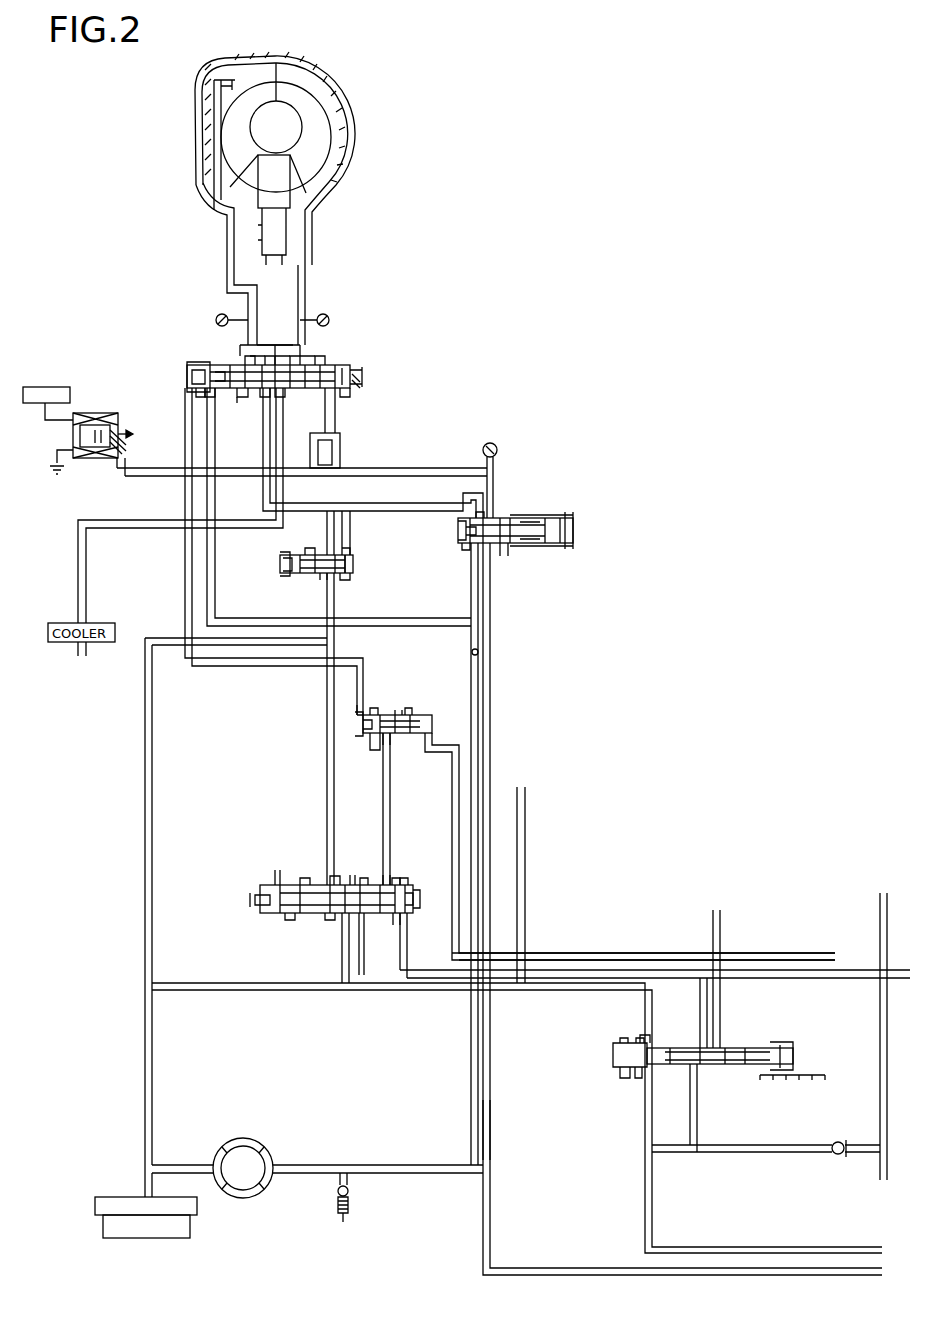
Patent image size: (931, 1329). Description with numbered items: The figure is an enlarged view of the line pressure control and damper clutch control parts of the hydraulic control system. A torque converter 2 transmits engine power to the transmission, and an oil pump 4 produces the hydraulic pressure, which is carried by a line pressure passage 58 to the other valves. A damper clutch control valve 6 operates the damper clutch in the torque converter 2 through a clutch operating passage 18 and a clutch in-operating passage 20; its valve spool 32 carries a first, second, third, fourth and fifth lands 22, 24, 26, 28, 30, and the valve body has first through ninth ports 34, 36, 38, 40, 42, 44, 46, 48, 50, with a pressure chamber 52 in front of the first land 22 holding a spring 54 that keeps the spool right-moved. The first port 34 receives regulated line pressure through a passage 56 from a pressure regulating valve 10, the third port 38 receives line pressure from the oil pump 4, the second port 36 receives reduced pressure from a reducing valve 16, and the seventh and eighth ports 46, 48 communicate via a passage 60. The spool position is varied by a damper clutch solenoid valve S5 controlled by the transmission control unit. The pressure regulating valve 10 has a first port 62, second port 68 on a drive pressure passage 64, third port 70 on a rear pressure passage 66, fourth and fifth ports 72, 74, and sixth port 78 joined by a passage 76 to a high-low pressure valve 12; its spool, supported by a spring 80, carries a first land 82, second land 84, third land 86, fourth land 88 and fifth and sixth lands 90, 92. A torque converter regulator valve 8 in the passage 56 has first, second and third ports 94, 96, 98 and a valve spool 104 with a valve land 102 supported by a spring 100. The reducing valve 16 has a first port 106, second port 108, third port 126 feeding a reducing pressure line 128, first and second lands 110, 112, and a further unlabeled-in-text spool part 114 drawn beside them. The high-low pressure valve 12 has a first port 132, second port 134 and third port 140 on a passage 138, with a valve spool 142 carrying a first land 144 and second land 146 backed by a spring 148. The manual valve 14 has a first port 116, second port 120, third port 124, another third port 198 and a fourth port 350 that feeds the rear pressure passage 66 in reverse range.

The torque converter 2 is at (357, 112).
The oil pump 4 is at (243, 1198).
The damper clutch control valve 6 is at (378, 379).
The torque converter regulator valve 8 is at (278, 574).
The pressure regulating valve 10 is at (256, 900).
The high-low pressure valve 12 is at (350, 739).
The manual valve 14 is at (611, 1058).
The reducing valve 16 is at (555, 505).
The clutch operating passage 18 is at (305, 276).
The clutch in-operating passage 20 is at (227, 276).
The first land 22 is at (220, 370).
The second land 24 is at (240, 395).
The third land 26 is at (280, 360).
The fourth land 28 is at (312, 367).
The fifth land 30 is at (347, 392).
The valve spool 32 is at (343, 372).
The first port 34 is at (260, 393).
The second port 36 is at (334, 393).
The third port 38 is at (212, 393).
The fourth port 40 is at (196, 392).
The fifth port 42 is at (293, 362).
The sixth port 44 is at (260, 366).
The seventh port 46 is at (320, 368).
The eighth port 48 is at (250, 372).
The ninth port 50 is at (282, 393).
The pressure chamber 52 is at (190, 370).
The spring 54 is at (188, 386).
The passage 56 is at (327, 806).
The line pressure passage 58 is at (470, 1093).
The valve spool 60 is at (286, 345).
The first port 62 is at (343, 916).
The drive pressure passage 64 is at (655, 970).
The rear pressure passage 66 is at (550, 992).
The second port 68 is at (405, 918).
The third port 70 is at (408, 930).
The fourth port 72 is at (333, 885).
The fifth port 74 is at (333, 880).
The passage 76 is at (390, 806).
The sixth port 78 is at (395, 880).
The spring 80 is at (292, 915).
The first land 82 is at (330, 916).
The second land 84 is at (352, 870).
The third land 86 is at (364, 883).
The fourth land 88 is at (387, 880).
The fifth land 90 is at (403, 886).
The sixth land 92 is at (410, 900).
The first port 94 is at (345, 576).
The second port 96 is at (350, 556).
The third port 98 is at (322, 576).
The spring 100 is at (283, 564).
The valve land 102 is at (312, 555).
The valve spool 104 is at (353, 564).
The first port 106 is at (466, 545).
The second port 108 is at (482, 520).
The first land 110 is at (460, 527).
The second land 112 is at (505, 550).
The land 114 is at (456, 533).
The first port 116 is at (695, 1072).
The second port 120 is at (718, 1043).
The third port 124 is at (702, 1043).
The third port 126 is at (489, 568).
The reducing pressure line 128 is at (491, 1130).
The first port 132 is at (360, 715).
The second port 134 is at (390, 742).
The passage 138 is at (577, 953).
The third port 140 is at (375, 742).
The valve spool 142 is at (360, 725).
The first land 144 is at (373, 714).
The second land 146 is at (410, 714).
The spring 148 is at (432, 736).
The third port 198 is at (650, 1068).
The fourth port 350 is at (645, 1043).
The damper clutch solenoid valve S5 is at (97, 410).